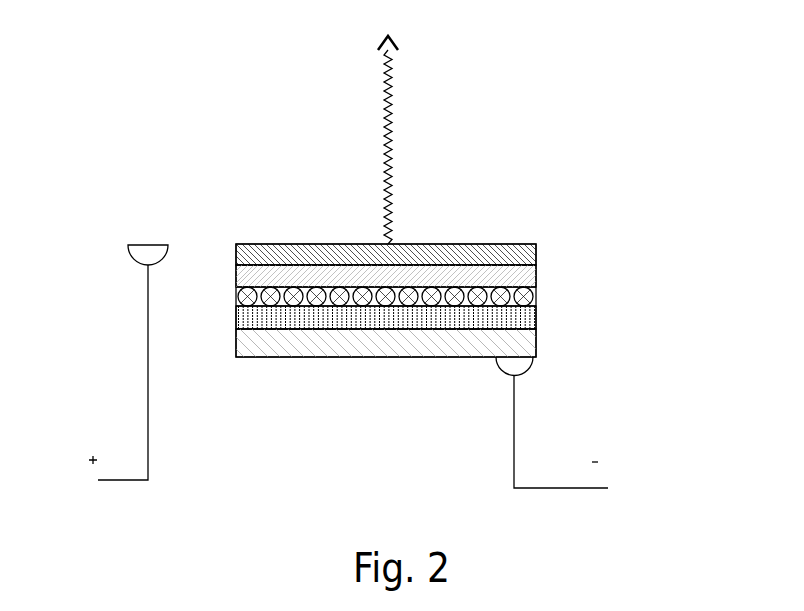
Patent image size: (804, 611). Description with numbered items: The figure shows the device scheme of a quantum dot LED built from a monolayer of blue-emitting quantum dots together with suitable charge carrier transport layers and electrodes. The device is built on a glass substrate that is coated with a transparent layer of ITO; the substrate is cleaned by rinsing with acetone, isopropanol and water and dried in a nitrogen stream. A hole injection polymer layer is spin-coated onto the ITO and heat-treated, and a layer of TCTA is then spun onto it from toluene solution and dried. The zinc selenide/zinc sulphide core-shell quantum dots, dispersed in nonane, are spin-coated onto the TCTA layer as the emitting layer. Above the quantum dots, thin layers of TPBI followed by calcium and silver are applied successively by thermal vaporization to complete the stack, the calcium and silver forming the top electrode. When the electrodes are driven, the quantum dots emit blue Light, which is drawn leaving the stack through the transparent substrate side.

The glass substrate is at (449, 220).
The ITO layer ITO is at (450, 257).
The TCTA layer TCTA is at (423, 306).
The TPBI layer TPBI is at (346, 362).
The emitted light Light is at (421, 140).